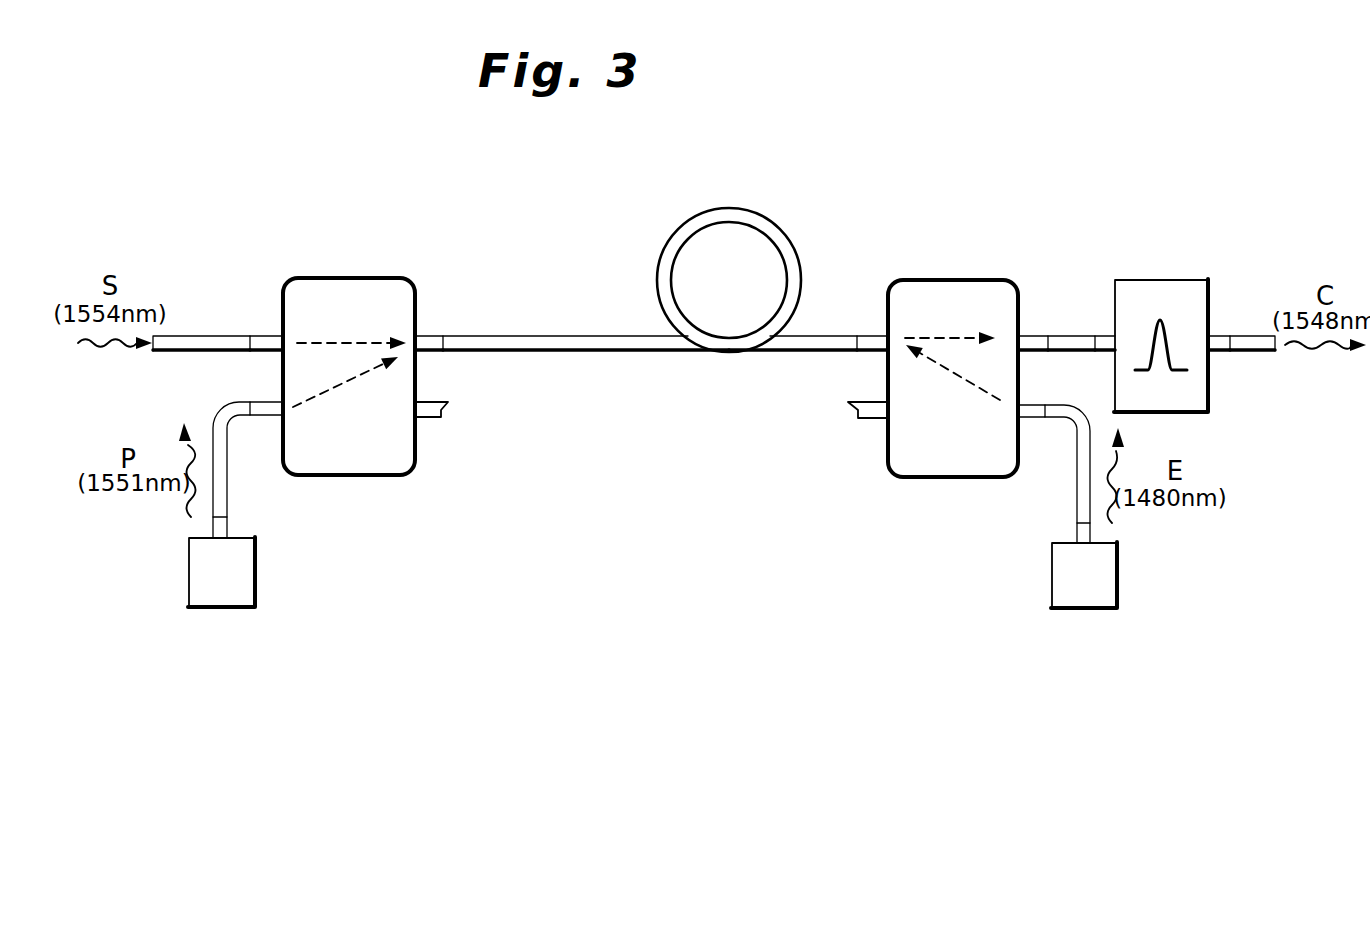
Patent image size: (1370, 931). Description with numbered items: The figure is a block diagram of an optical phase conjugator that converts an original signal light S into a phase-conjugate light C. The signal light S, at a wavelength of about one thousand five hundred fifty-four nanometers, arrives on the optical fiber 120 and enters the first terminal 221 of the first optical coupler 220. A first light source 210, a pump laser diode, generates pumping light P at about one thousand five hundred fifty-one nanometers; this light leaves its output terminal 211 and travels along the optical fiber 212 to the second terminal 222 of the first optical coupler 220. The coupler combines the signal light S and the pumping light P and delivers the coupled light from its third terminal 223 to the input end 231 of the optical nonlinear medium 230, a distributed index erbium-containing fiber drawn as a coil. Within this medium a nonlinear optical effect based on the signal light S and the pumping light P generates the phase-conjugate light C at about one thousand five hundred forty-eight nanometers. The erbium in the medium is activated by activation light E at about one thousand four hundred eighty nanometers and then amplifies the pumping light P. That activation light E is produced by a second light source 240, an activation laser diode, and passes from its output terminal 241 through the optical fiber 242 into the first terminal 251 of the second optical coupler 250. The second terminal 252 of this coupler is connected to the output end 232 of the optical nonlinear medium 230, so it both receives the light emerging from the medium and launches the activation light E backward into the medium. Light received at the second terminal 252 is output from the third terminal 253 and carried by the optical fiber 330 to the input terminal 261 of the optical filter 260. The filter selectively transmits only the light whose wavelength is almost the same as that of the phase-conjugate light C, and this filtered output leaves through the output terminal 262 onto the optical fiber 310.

The optical fiber 120 is at (192, 335).
The first light source 210 is at (243, 582).
The output terminal 211 is at (227, 530).
The optical fiber 212 is at (227, 493).
The first optical coupler 220 is at (351, 284).
The first terminal 221 is at (262, 336).
The second terminal 222 is at (262, 401).
The third terminal 223 is at (426, 336).
The optical nonlinear medium 230 is at (790, 252).
The input end 231 is at (475, 337).
The output end 232 is at (826, 351).
The second light source 240 is at (1110, 588).
The output terminal 241 is at (1077, 537).
The optical fiber 242 is at (1077, 491).
The second optical coupler 250 is at (953, 282).
The first terminal 251 is at (1040, 405).
The second terminal 252 is at (868, 338).
The third terminal 253 is at (1036, 338).
The optical filter 260 is at (1158, 288).
The input terminal 261 is at (1100, 338).
The output terminal 262 is at (1223, 338).
The optical fiber 310 is at (1249, 340).
The optical fiber 330 is at (1068, 338).